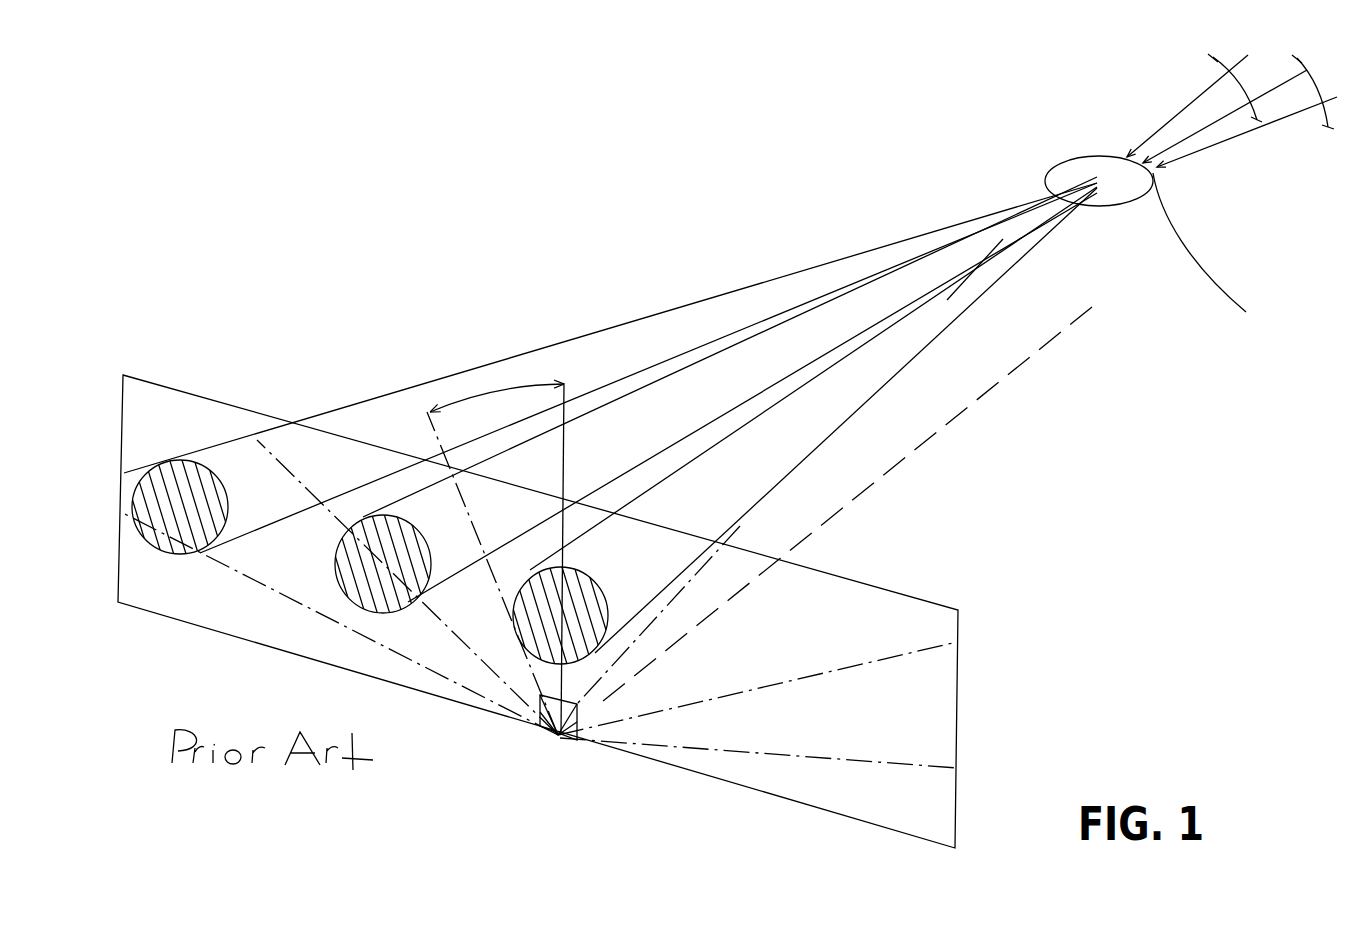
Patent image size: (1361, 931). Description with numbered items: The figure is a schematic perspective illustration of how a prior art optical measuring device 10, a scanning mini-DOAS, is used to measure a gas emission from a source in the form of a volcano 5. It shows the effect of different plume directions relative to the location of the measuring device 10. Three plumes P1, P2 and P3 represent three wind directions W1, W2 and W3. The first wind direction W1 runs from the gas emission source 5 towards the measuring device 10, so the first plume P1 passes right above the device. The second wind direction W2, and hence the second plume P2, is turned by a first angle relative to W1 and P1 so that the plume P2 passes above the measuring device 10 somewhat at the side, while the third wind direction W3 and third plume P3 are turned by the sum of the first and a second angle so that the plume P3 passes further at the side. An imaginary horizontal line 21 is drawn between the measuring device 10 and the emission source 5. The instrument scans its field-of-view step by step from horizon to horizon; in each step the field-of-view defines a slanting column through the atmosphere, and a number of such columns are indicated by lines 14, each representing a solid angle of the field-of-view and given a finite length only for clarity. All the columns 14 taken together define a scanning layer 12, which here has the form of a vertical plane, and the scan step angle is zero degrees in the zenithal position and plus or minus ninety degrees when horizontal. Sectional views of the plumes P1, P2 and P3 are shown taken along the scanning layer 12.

The gas emission source 5 is at (1205, 265).
The first wind direction W1 is at (1180, 110).
The second wind direction W2 is at (1230, 113).
The third wind direction W3 is at (1185, 155).
The imaginary horizontal line 21 is at (1043, 345).
The first plume P1 is at (628, 557).
The second plume P2 is at (425, 518).
The third plume P3 is at (237, 472).
The optical measuring device 10 is at (558, 736).
The scanning layer 12 is at (958, 683).
The lines representing columns 14 is at (765, 768).